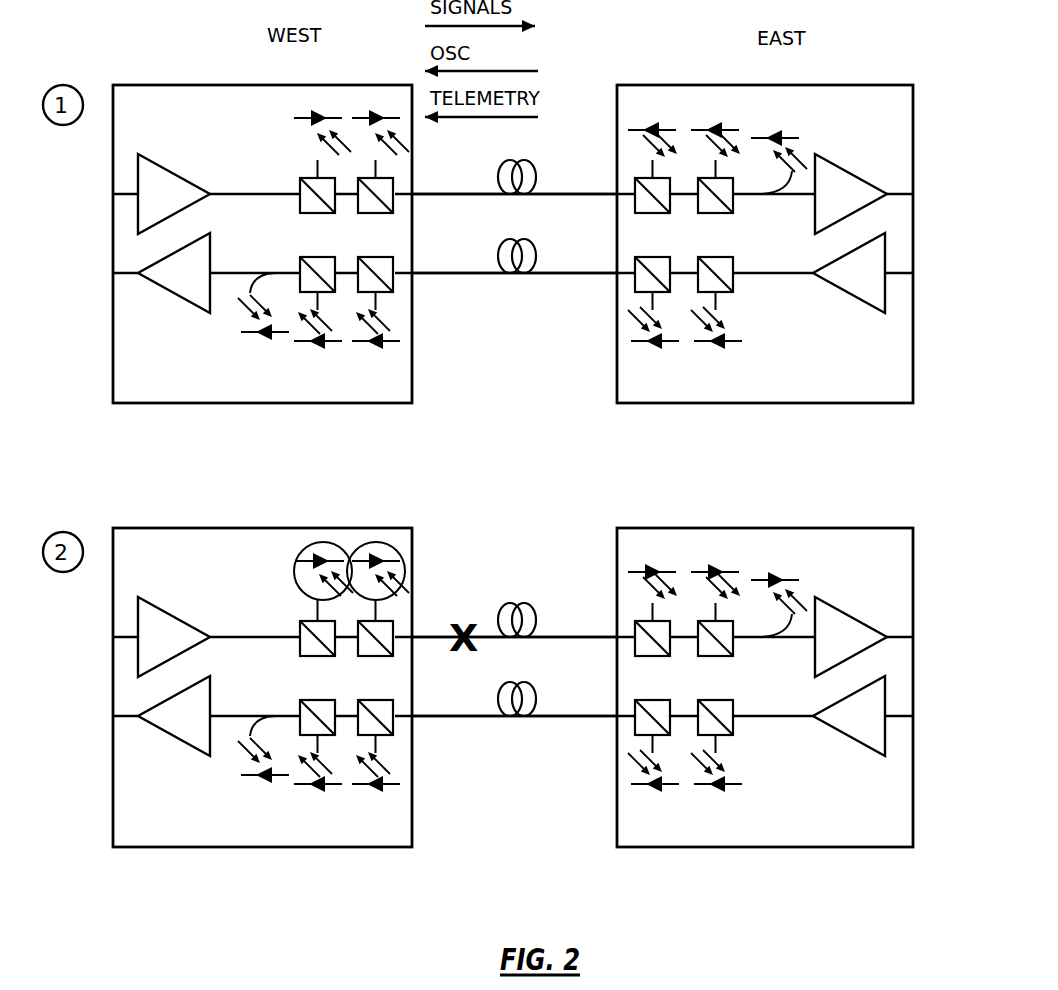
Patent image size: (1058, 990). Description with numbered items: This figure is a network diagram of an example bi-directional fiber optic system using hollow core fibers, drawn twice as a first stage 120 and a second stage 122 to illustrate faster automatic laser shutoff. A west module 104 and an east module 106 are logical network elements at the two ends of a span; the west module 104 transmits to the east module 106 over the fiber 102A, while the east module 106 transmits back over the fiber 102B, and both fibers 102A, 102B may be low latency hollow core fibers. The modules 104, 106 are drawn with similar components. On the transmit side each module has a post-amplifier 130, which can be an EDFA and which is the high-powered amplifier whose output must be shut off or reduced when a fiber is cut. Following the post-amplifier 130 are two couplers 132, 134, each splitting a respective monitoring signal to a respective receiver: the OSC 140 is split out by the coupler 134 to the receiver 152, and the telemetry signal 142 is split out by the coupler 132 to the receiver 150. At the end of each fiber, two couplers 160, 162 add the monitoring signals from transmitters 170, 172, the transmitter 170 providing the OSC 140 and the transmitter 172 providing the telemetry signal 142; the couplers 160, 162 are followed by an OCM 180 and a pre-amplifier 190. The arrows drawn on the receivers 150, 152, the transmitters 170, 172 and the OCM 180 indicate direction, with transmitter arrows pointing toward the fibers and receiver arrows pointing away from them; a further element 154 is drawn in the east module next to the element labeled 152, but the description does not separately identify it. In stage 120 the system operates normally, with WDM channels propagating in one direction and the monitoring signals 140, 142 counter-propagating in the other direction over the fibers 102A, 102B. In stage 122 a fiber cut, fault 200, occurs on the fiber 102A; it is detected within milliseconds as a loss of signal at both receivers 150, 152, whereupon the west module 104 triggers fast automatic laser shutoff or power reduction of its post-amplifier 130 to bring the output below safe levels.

The hollow core fiber 102A is at (590, 196).
The hollow core fiber 102B is at (590, 275).
The west module 104 is at (334, 58).
The east module 106 is at (856, 58).
The first stage 120 is at (62, 85).
The second stage 122 is at (62, 532).
The post-amplifier 130 is at (175, 168).
The coupler 132 is at (300, 205).
The coupler 134 is at (395, 205).
The OSC 140 is at (537, 71).
The telemetry signal 142 is at (490, 117).
The receiver 150 is at (312, 115).
The receiver 152 is at (352, 115).
The third optical transmitter 154 is at (715, 345).
The coupler 160 is at (395, 283).
The coupler 162 is at (300, 290).
The transmitter 170 is at (655, 130).
The transmitter 172 is at (713, 130).
The OCM 180 is at (775, 135).
The pre-amplifier 190 is at (182, 302).
The fault 200 is at (455, 622).